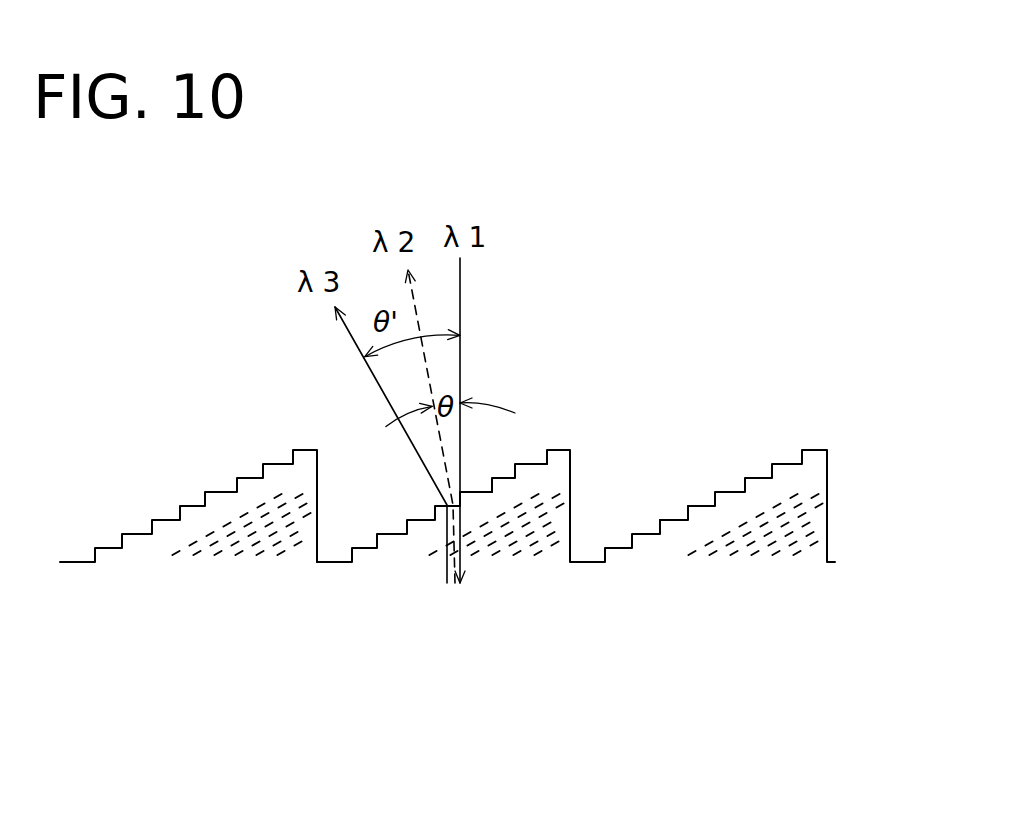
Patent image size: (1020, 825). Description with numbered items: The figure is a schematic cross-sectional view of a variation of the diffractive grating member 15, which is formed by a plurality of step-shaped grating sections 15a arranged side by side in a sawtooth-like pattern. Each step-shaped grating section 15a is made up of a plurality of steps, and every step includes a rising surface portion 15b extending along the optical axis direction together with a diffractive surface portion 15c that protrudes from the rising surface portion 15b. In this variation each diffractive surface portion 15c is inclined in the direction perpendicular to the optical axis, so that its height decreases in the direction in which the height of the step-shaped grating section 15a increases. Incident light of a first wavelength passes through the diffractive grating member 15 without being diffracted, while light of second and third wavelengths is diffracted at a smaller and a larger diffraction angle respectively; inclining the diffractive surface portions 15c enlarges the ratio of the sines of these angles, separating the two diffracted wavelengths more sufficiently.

The diffractive grating member 15 is at (447, 552).
The step-shaped grating section 15a is at (540, 572).
The rising surface portion 15b is at (689, 517).
The diffractive surface portion 15c is at (503, 468).